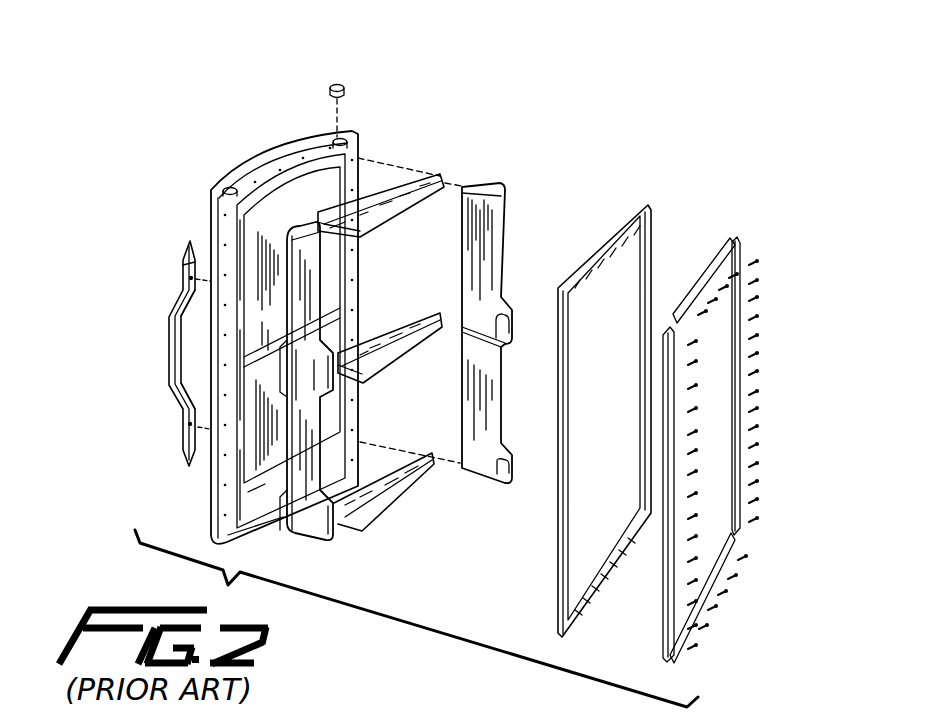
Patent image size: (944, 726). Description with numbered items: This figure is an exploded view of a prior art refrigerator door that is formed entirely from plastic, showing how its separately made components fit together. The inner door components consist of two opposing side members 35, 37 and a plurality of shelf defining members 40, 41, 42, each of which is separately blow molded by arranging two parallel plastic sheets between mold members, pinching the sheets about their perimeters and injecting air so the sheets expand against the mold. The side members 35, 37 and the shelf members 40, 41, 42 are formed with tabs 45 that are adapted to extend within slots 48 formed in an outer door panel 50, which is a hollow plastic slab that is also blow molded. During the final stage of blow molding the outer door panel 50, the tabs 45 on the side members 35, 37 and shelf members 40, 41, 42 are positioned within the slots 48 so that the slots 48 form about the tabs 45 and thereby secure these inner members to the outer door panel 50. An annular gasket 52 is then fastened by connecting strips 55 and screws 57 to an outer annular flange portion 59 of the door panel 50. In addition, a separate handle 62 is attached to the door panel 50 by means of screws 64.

The outer door panel 50 is at (245, 158).
The slots 48 is at (240, 248).
The outer annular flange portion 59 is at (223, 473).
The side member 37 is at (307, 518).
The shelf defining member 40 is at (423, 180).
The shelf defining member 41 is at (407, 348).
The shelf defining member 42 is at (390, 503).
The tabs 45 is at (375, 192).
The side member 35 is at (483, 255).
The annular gasket 52 is at (645, 237).
The connecting strips 55 is at (738, 382).
The screws 57 is at (752, 446).
The handle 62 is at (178, 347).
The screws 64 is at (177, 273).